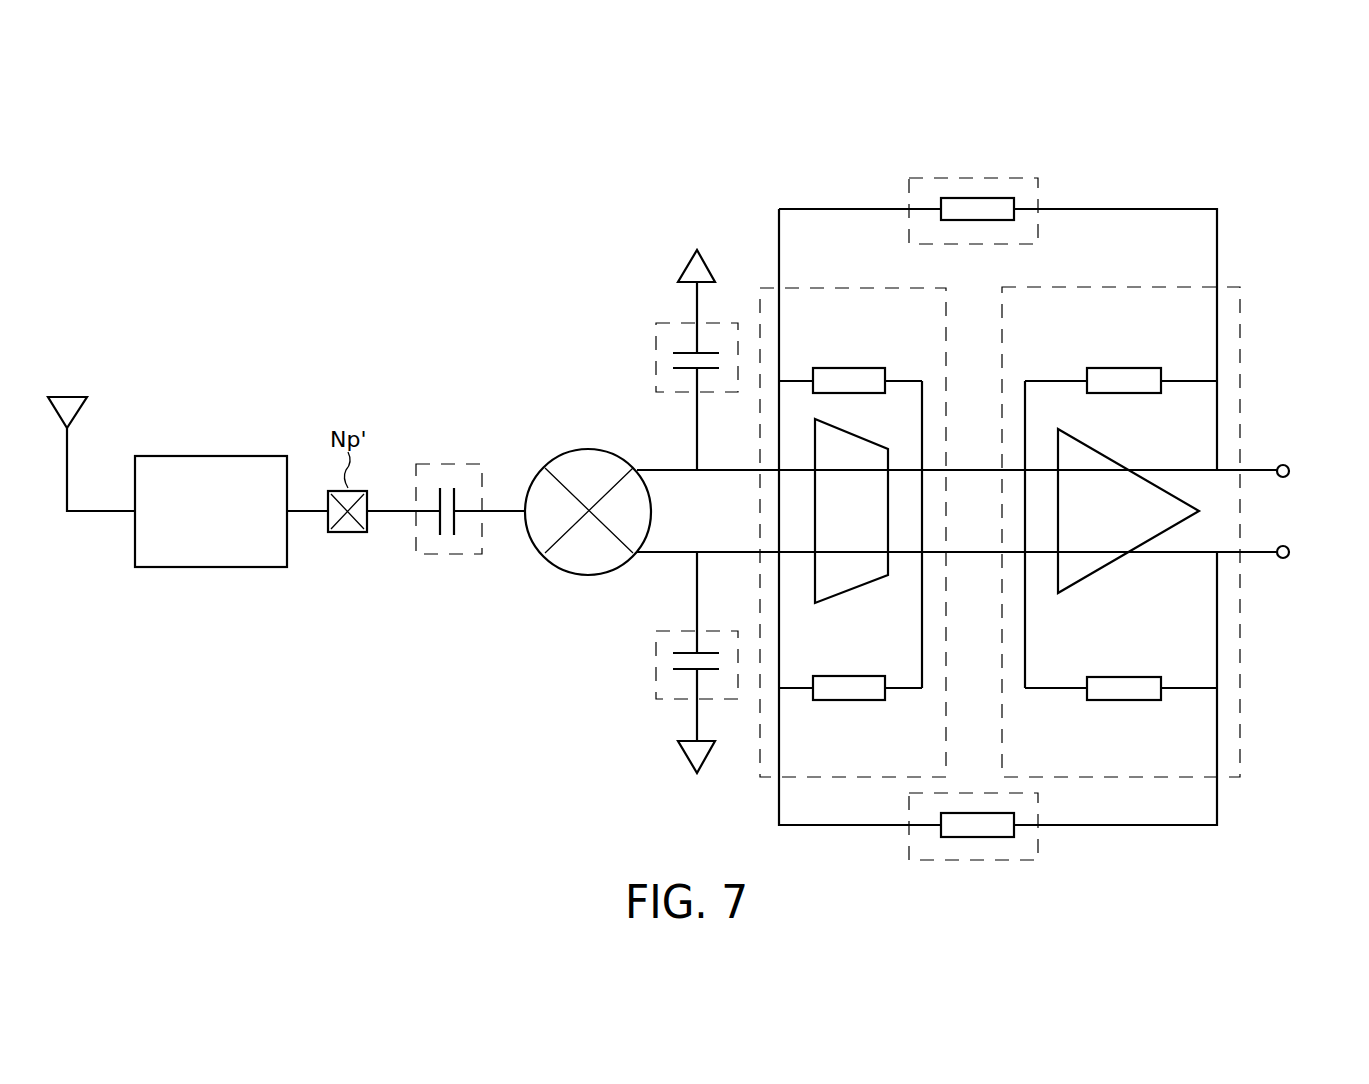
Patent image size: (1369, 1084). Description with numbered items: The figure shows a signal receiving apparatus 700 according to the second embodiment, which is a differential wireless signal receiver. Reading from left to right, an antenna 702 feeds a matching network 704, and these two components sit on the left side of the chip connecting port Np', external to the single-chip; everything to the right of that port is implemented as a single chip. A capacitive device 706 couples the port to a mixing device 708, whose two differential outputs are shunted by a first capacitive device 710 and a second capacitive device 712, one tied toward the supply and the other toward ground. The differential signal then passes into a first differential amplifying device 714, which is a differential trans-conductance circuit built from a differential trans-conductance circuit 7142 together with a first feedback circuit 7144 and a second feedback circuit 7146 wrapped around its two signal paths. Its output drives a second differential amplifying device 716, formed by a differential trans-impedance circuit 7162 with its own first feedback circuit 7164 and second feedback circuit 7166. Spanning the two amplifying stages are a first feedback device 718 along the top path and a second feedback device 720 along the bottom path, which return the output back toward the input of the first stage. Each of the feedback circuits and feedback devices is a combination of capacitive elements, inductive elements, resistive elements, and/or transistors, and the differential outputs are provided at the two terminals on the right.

The signal receiving apparatus 700 is at (1255, 136).
The antenna 702 is at (67, 395).
The matching network 704 is at (211, 455).
The capacitive device 706 is at (447, 460).
The mixing device 708 is at (588, 449).
The first capacitive device 710 is at (667, 322).
The second capacitive device 712 is at (656, 664).
The first differential amplifying device 714 is at (853, 504).
The second differential amplifying device 716 is at (1121, 504).
The first feedback device 718 is at (988, 178).
The second feedback device 720 is at (1038, 845).
The differential trans-conductance circuit 7142 is at (855, 590).
The first feedback circuit 7144 is at (847, 368).
The second feedback circuit 7146 is at (848, 702).
The differential trans-impedance circuit 7162 is at (1132, 560).
The first feedback circuit 7164 is at (1122, 368).
The second feedback circuit 7166 is at (1122, 703).